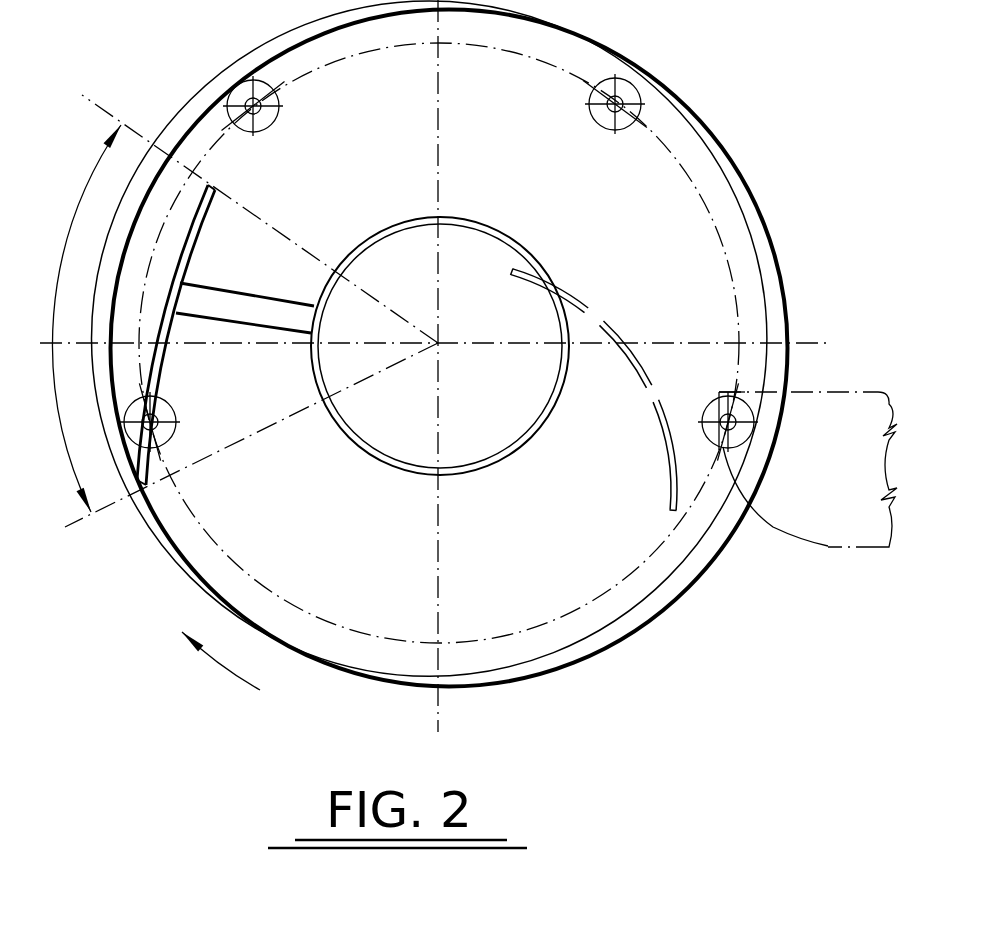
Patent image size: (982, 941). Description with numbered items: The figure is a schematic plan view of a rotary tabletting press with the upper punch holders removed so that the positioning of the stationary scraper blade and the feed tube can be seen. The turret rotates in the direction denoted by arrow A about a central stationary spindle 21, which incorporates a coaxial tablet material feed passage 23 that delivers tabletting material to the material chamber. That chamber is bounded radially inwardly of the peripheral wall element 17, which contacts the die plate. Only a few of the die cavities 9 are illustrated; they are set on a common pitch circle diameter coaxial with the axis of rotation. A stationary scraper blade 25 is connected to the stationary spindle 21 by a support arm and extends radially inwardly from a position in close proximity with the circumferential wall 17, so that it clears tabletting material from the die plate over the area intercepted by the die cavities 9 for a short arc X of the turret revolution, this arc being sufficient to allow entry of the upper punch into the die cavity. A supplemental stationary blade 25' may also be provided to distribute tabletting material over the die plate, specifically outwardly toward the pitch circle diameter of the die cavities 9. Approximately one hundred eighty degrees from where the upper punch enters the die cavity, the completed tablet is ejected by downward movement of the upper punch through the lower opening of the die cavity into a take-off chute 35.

The die cavities 9 is at (253, 100).
The peripheral wall element 17 is at (177, 562).
The stationary spindle 21 is at (397, 222).
The tablet material feed passage 23 is at (461, 244).
The stationary scraper blade 25 is at (199, 384).
The supplemental stationary blade 25' is at (594, 355).
The take-off chute 35 is at (815, 480).
The arrow denoting rotation of the turret A is at (240, 677).
The short arc of the revolution of the turret X is at (79, 318).